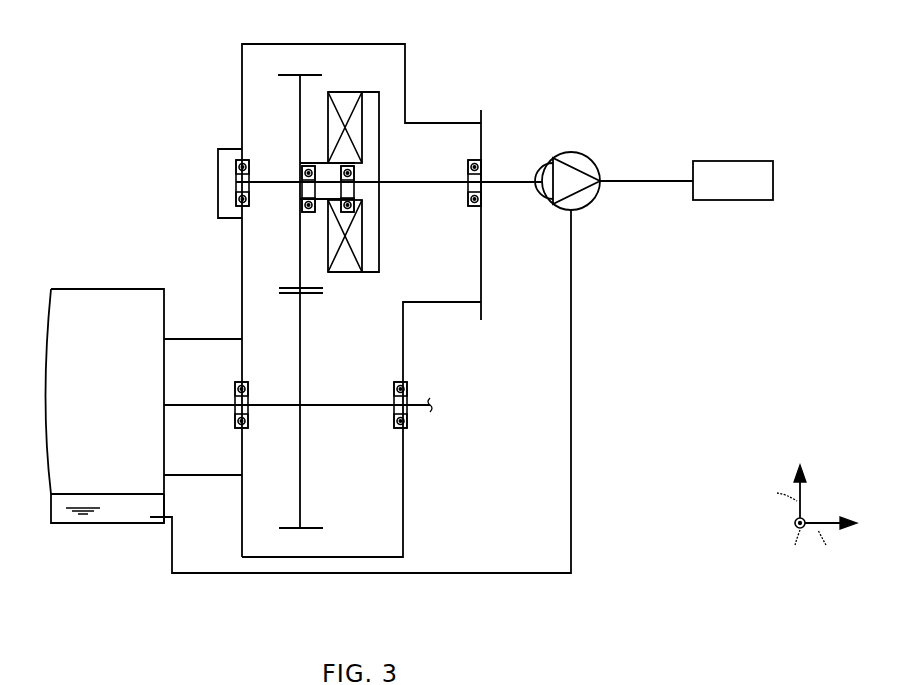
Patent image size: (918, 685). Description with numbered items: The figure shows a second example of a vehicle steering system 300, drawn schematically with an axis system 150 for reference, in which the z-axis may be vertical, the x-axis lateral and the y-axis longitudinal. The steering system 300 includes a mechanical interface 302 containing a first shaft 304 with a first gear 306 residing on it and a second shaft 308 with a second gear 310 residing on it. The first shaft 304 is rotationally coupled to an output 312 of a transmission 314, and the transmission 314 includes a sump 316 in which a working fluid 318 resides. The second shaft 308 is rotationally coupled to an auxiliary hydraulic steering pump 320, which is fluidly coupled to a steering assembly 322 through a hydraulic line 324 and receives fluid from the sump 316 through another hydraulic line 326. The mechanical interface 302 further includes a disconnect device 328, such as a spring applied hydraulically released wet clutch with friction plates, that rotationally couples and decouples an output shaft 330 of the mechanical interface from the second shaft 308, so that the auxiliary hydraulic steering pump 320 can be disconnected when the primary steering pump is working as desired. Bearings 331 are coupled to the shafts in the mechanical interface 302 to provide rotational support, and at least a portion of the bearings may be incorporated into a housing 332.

The vehicle steering system 300 is at (770, 78).
The mechanical interface 302 is at (192, 79).
The first shaft 304 is at (316, 404).
The first gear 306 is at (300, 340).
The second shaft 308 is at (277, 178).
The second gear 310 is at (300, 113).
The output 312 is at (173, 413).
The transmission 314 is at (80, 289).
The sump 316 is at (165, 498).
The working fluid 318 is at (107, 520).
The auxiliary hydraulic steering pump 320 is at (567, 150).
The steering assembly 322 is at (726, 161).
The hydraulic line 324 is at (652, 180).
The hydraulic line 326 is at (571, 268).
The disconnect device 328 is at (424, 240).
The output shaft 330 is at (427, 178).
The bearings 331 is at (407, 420).
The housing 332 is at (242, 130).
The axis system 150 is at (837, 497).